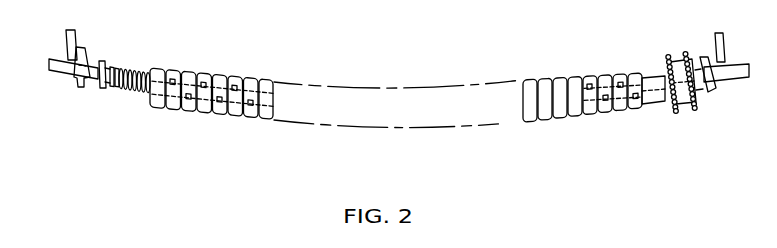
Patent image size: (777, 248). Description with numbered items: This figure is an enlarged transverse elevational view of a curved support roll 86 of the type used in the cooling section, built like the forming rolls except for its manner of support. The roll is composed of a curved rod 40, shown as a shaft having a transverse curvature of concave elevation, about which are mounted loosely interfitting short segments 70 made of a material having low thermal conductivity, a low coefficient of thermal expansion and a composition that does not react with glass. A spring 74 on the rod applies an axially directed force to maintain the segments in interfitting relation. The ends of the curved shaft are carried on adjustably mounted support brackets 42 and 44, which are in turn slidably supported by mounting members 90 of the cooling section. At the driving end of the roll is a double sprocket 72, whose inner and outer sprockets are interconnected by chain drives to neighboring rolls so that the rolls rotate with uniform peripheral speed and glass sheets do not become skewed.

The curved rod 40 is at (98, 62).
The support bracket 42 is at (79, 87).
The support bracket 44 is at (712, 88).
The short segments 70 is at (220, 75).
The double sprocket 72 is at (684, 104).
The spring 74 is at (136, 66).
The curved support roll 86 is at (379, 82).
The mounting member 90 is at (67, 50).